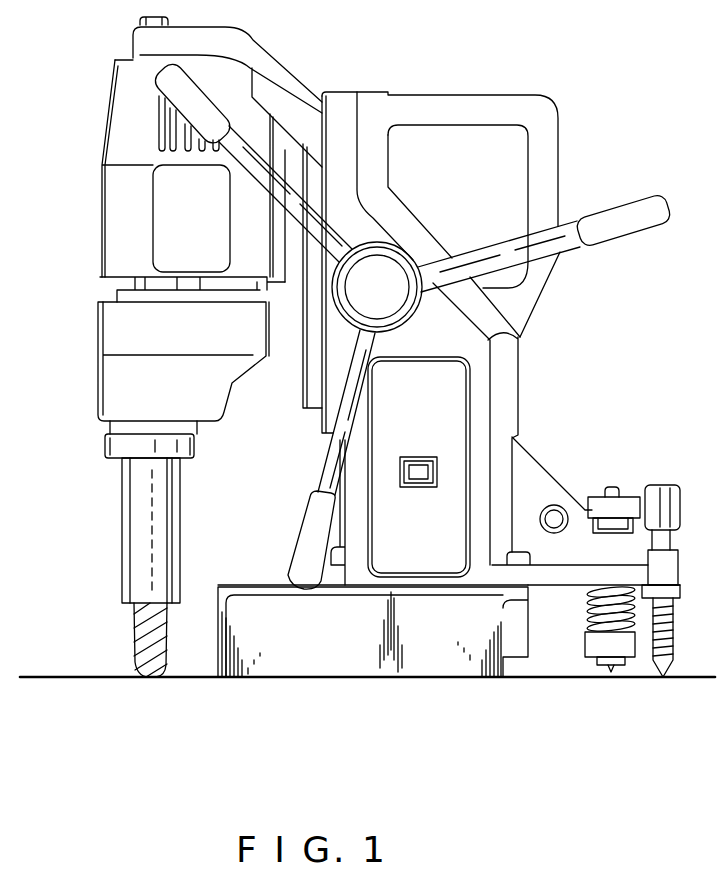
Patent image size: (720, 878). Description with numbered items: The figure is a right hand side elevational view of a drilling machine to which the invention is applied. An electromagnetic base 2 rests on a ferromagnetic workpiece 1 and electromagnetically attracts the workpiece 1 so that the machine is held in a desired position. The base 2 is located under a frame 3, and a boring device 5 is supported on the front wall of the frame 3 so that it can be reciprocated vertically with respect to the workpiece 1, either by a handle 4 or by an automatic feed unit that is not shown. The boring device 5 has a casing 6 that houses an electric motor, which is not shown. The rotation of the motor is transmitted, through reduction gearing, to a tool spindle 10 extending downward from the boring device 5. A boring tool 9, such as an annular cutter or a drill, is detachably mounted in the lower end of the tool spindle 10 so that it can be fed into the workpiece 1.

The ferromagnetic workpiece 1 is at (548, 688).
The electromagnetic base 2 is at (237, 648).
The frame 3 is at (520, 337).
The handle 4 is at (463, 263).
The boring device 5 is at (98, 360).
The casing 6 is at (211, 410).
The boring tool 9 is at (134, 622).
The tool spindle 10 is at (172, 549).